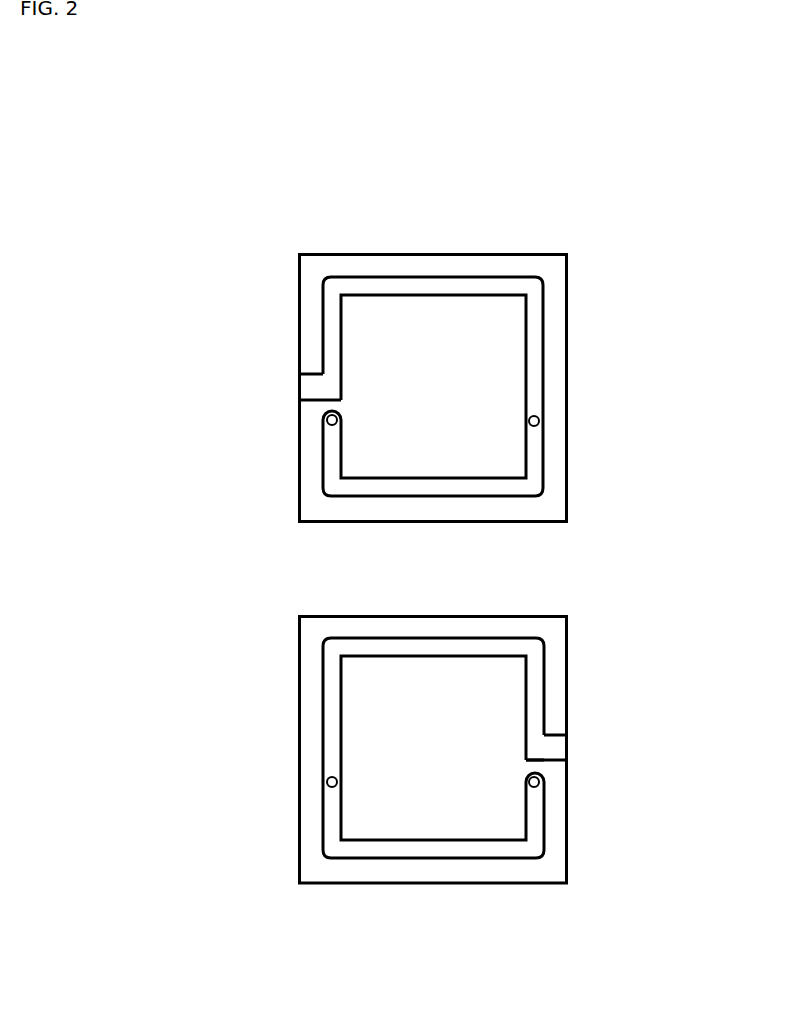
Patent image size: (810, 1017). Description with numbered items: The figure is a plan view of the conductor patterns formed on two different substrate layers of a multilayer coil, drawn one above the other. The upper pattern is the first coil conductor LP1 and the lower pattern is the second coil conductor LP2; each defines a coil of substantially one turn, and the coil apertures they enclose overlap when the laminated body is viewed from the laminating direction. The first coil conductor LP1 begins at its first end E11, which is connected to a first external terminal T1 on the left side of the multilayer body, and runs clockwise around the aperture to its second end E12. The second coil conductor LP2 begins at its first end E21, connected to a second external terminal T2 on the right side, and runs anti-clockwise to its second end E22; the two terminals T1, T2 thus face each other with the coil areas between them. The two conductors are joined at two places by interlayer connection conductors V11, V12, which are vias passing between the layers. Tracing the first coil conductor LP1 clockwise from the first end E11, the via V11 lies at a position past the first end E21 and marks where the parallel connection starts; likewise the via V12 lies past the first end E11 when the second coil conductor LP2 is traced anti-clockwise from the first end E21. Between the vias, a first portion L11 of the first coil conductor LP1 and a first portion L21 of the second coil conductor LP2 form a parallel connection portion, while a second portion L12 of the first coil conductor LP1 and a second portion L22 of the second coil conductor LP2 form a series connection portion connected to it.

The first coil conductor LP1 is at (471, 387).
The second coil conductor LP2 is at (490, 748).
The first portion of the first coil conductor L11 is at (433, 471).
The second portion of the first coil conductor L12 is at (433, 311).
The first portion of the second coil conductor L21 is at (433, 832).
The second portion of the second coil conductor L22 is at (433, 671).
The first external terminal T1 is at (293, 387).
The second external terminal T2 is at (564, 747).
The first end of the first coil conductor E11 is at (355, 387).
The second end of the first coil conductor E12 is at (353, 420).
The first end of the second coil conductor E21 is at (510, 748).
The second end of the second coil conductor E22 is at (511, 780).
The interlayer connection conductor V11 is at (540, 421).
The interlayer connection conductor V12 is at (326, 420).